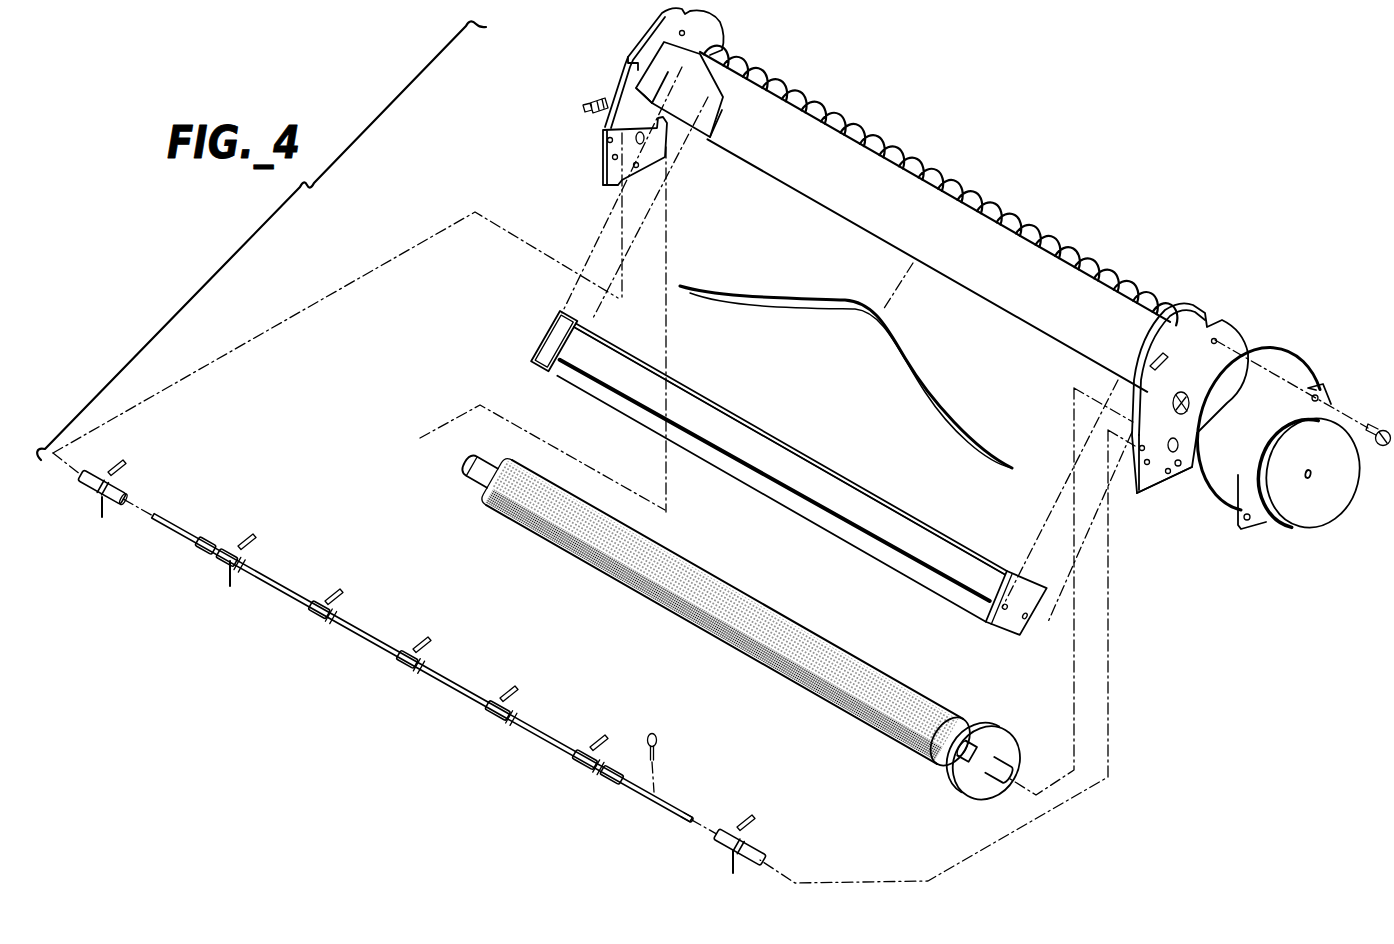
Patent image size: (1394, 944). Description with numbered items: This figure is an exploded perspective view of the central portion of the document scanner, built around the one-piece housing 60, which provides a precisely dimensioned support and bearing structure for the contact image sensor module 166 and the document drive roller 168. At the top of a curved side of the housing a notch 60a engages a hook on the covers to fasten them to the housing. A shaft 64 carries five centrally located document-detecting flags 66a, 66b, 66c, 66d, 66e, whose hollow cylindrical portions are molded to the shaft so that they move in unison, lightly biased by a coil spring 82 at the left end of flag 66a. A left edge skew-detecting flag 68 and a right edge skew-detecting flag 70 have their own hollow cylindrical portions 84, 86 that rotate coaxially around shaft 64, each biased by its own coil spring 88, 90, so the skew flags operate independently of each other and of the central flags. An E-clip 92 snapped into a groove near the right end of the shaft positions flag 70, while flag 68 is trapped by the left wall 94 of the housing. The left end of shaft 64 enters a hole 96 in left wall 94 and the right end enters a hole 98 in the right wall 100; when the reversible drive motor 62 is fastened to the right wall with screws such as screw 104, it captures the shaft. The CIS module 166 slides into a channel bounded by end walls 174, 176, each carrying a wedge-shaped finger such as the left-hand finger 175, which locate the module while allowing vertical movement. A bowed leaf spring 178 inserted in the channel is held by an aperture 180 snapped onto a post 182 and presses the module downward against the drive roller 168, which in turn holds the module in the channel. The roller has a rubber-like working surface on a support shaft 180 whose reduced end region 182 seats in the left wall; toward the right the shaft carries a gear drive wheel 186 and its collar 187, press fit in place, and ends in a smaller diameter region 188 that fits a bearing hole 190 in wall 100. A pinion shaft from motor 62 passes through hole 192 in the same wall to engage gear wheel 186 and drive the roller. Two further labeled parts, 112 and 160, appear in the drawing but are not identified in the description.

The one-piece housing 60 is at (1016, 164).
The notch 60a is at (645, 20).
The reversible drive motor 62 is at (1293, 513).
The shaft 64 is at (672, 805).
The document-detecting flag 66a is at (248, 539).
The document-detecting flag 66b is at (340, 585).
The document-detecting flag 66c is at (433, 638).
The document-detecting flag 66d is at (522, 684).
The document-detecting flag 66e is at (592, 736).
The left edge skew-detecting flag 68 is at (117, 466).
The right edge skew-detecting flag 70 is at (760, 822).
The coil spring 82 is at (230, 580).
The hollow cylindrical portion 84 is at (125, 492).
The hollow cylindrical portion 86 is at (727, 845).
The coil spring 88 is at (108, 514).
The coil spring 90 is at (732, 868).
The E-clip 92 is at (660, 738).
The left wall 94 is at (616, 180).
The hole 96 is at (607, 142).
The hole 98 is at (1142, 443).
The right wall 100 is at (1178, 466).
The screw 104 is at (1378, 430).
The hole 112 is at (1170, 476).
The pin 160 is at (598, 104).
The contact image sensor module 166 is at (538, 343).
The document drive roller 168 is at (834, 178).
The end wall 174 is at (645, 120).
The left-hand wedge-shaped finger 175 is at (665, 78).
The end wall 176 is at (1140, 360).
The leaf spring 178 is at (930, 387).
The support shaft 180 is at (916, 357).
The reduced-diameter end region 182 is at (467, 460).
The gear drive wheel 186 is at (990, 737).
The collar 187 is at (947, 750).
The smaller diameter region 188 is at (990, 776).
The bearing hole 190 is at (1183, 446).
The hole 192 is at (1190, 403).